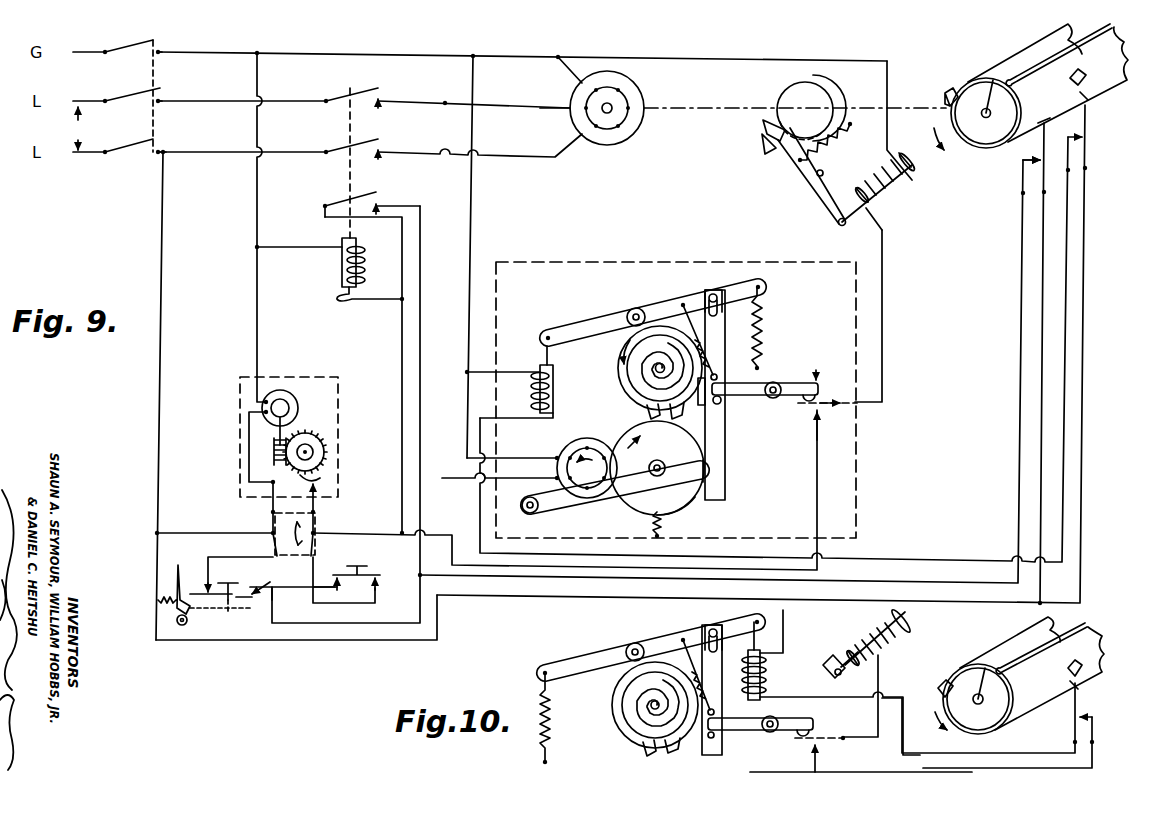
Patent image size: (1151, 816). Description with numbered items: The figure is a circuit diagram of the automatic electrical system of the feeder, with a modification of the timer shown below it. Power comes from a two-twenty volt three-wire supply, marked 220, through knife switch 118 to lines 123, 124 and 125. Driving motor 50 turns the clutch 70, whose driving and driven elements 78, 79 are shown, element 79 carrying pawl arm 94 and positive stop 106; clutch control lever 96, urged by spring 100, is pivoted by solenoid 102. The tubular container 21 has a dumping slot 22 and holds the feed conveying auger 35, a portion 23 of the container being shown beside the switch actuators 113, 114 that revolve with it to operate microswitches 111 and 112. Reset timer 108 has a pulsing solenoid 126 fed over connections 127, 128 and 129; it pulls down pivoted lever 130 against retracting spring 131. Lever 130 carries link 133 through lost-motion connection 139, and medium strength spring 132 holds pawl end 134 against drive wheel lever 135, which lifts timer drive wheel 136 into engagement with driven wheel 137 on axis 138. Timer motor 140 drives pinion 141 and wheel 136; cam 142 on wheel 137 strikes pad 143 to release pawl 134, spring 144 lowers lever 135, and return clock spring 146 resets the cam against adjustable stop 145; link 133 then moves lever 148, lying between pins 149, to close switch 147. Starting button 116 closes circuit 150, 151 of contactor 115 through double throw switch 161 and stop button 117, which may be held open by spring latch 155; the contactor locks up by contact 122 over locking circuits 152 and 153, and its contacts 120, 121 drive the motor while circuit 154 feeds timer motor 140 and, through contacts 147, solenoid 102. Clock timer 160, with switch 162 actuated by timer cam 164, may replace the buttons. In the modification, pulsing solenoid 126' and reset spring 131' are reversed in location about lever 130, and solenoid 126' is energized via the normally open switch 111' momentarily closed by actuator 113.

In FIG. 9, the container tube 21 is at (1106, 88).
In FIG. 10, the container tube 21 is at (1088, 643).
In FIG. 9, the dumping slot 22 is at (1010, 63).
In FIG. 10, the dumping slot 22 is at (995, 648).
In FIG. 9, the drum rotation arrow 23 is at (984, 150).
In FIG. 9, the feed conveying auger 35 is at (998, 134).
In FIG. 10, the feed conveying auger 35 is at (990, 722).
In FIG. 9, the driving motor 50 is at (618, 141).
In FIG. 9, the clutch 70 is at (768, 97).
In FIG. 9, the clutch driving element 78 is at (842, 101).
In FIG. 9, the clutch driven element 79 is at (787, 96).
In FIG. 9, the pawl arm 94 is at (766, 148).
In FIG. 9, the clutch control lever 96 is at (808, 172).
In FIG. 10, the clutch control lever 96 is at (836, 655).
In FIG. 9, the spring 100 is at (838, 136).
In FIG. 9, the clutch control solenoid 102 is at (890, 197).
In FIG. 10, the clutch control solenoid 102 is at (892, 636).
In FIG. 9, the positive stop 106 is at (763, 126).
In FIG. 9, the reset timer 108 is at (645, 256).
In FIG. 9, the microswitch 111 is at (783, 355).
In FIG. 10, the conductor 111' is at (1031, 740).
In FIG. 9, the microswitch 112 is at (1023, 176).
In FIG. 9, the switch actuator 113 is at (1086, 75).
In FIG. 10, the switch actuator 113 is at (1070, 669).
In FIG. 9, the switch actuator 114 is at (945, 96).
In FIG. 10, the switch actuator 114 is at (938, 691).
In FIG. 9, the contactor 115 is at (340, 284).
In FIG. 9, the starting switch 116 is at (357, 565).
In FIG. 9, the stopping switch 117 is at (238, 584).
In FIG. 9, the knife switch 118 is at (134, 152).
In FIG. 9, the contactor contact 120 is at (374, 90).
In FIG. 9, the contactor contact 121 is at (374, 140).
In FIG. 9, the locking contact 122 is at (374, 193).
In FIG. 9, the line 123 is at (308, 53).
In FIG. 9, the line 124 is at (303, 101).
In FIG. 9, the line 125 is at (303, 153).
In FIG. 9, the pulsing solenoid 126 is at (534, 382).
In FIG. 10, the pulsing solenoid 126' is at (831, 688).
In FIG. 9, the connection 127 is at (474, 196).
In FIG. 10, the connection 127 is at (784, 628).
In FIG. 9, the connection 128 is at (480, 497).
In FIG. 9, the connection 129 is at (1084, 352).
In FIG. 9, the pivoted lever 130 is at (664, 305).
In FIG. 10, the pivoted lever 130 is at (597, 659).
In FIG. 9, the retracting spring 131 is at (785, 328).
In FIG. 10, the reset spring 131' is at (574, 718).
In FIG. 9, the medium strength spring 132 is at (709, 342).
In FIG. 10, the medium strength spring 132 is at (708, 689).
In FIG. 9, the switch and clutch control link 133 is at (727, 432).
In FIG. 9, the pawl end 134 is at (696, 498).
In FIG. 9, the timer drive wheel lever 135 is at (600, 502).
In FIG. 9, the timer drive wheel 136 is at (674, 454).
In FIG. 9, the time-set driven wheel 137 is at (622, 393).
In FIG. 10, the time-set driven wheel 137 is at (612, 698).
In FIG. 9, the timer axis 138 is at (660, 375).
In FIG. 9, the lost-motion pivotal connection 139 is at (716, 292).
In FIG. 10, the lost-motion pivotal connection 139 is at (712, 627).
In FIG. 9, the timer motor 140 is at (573, 441).
In FIG. 9, the pinion 141 is at (619, 467).
In FIG. 9, the cam 142 is at (700, 418).
In FIG. 10, the cam 142 is at (672, 751).
In FIG. 9, the pad 143 is at (699, 392).
In FIG. 9, the spring 144 is at (655, 538).
In FIG. 9, the adjustable stop 145 is at (648, 414).
In FIG. 10, the adjustable stop 145 is at (645, 753).
In FIG. 9, the return clock spring 146 is at (663, 349).
In FIG. 9, the switch 147 is at (829, 407).
In FIG. 9, the pivoted lever 148 is at (812, 382).
In FIG. 10, the pivoted lever 148 is at (740, 732).
In FIG. 9, the pins 149 is at (722, 400).
In FIG. 9, the contactor circuit 150 is at (158, 352).
In FIG. 9, the contactor circuit 151 is at (258, 214).
In FIG. 9, the locking circuit 152 is at (420, 373).
In FIG. 9, the locking circuit 153 is at (528, 598).
In FIG. 10, the locking circuit 153 is at (878, 777).
In FIG. 9, the timer motor circuit 154 is at (468, 246).
In FIG. 9, the spring latch 155 is at (189, 614).
In FIG. 9, the clock timer 160 is at (238, 446).
In FIG. 9, the double pole double throw switch 161 is at (318, 527).
In FIG. 9, the clock timer switch 162 is at (340, 476).
In FIG. 9, the timer cam 164 is at (284, 466).
In FIG. 9, the voltage 220 is at (80, 128).